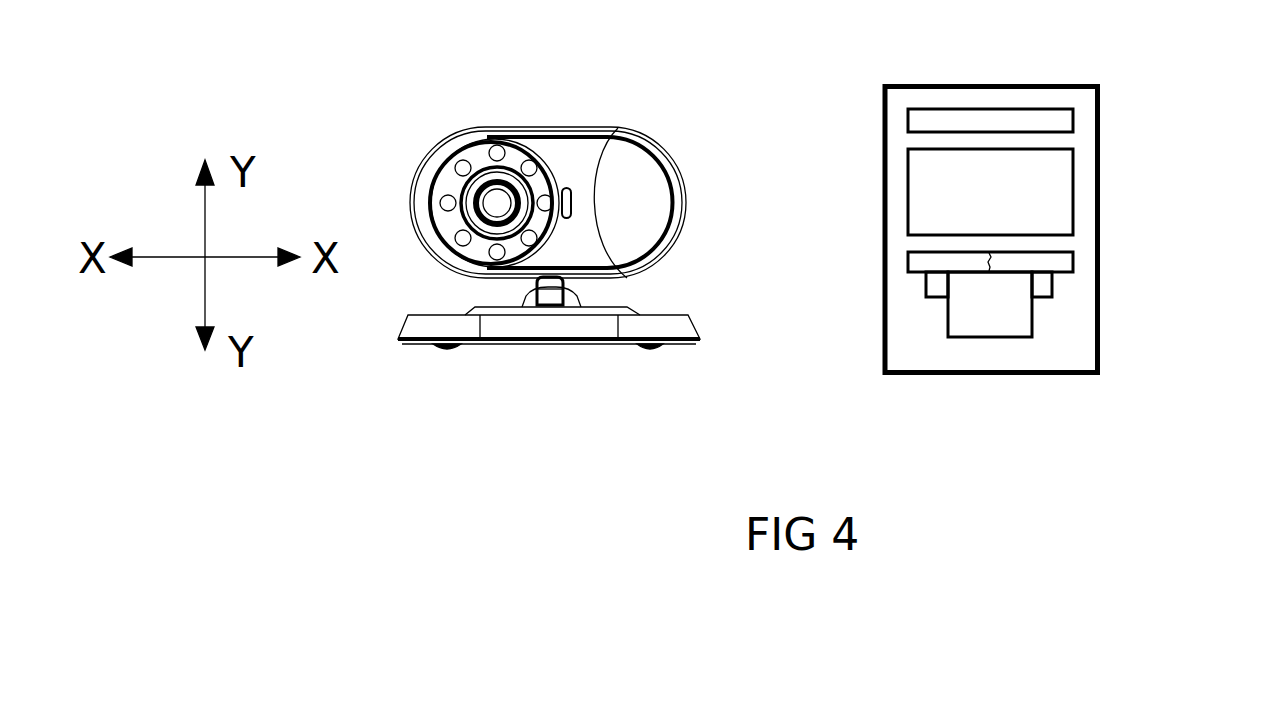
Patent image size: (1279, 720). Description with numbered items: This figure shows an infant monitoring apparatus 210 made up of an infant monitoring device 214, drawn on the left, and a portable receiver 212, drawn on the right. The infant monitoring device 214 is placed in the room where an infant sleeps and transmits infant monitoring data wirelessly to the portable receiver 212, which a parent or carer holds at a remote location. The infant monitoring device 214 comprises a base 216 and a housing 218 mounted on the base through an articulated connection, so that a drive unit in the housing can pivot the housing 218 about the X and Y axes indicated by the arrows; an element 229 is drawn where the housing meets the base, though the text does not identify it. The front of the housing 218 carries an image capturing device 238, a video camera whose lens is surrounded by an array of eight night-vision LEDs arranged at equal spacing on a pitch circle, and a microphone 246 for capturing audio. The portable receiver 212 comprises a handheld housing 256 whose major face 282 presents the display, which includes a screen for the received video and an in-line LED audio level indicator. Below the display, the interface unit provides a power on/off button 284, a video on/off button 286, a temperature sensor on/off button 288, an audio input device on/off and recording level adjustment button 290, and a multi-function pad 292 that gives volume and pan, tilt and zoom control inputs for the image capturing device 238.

The infant monitoring apparatus 210 is at (713, 425).
The portable receiver 212 is at (850, 122).
The infant monitoring device 214 is at (432, 358).
The base 216 is at (673, 345).
The housing 218 is at (686, 192).
The stand mount 229 is at (535, 282).
The image capturing device 238 is at (497, 152).
The microphone 246 is at (567, 188).
The handheld housing 256 is at (1060, 85).
The major face 282 is at (1088, 347).
The power on/off button 284 is at (928, 287).
The video on/off button 286 is at (932, 265).
The temperature sensor on/off button 288 is at (1060, 262).
The audio input device on/off and recording level adjustment button 290 is at (1050, 288).
The multi-function pad 292 is at (998, 327).